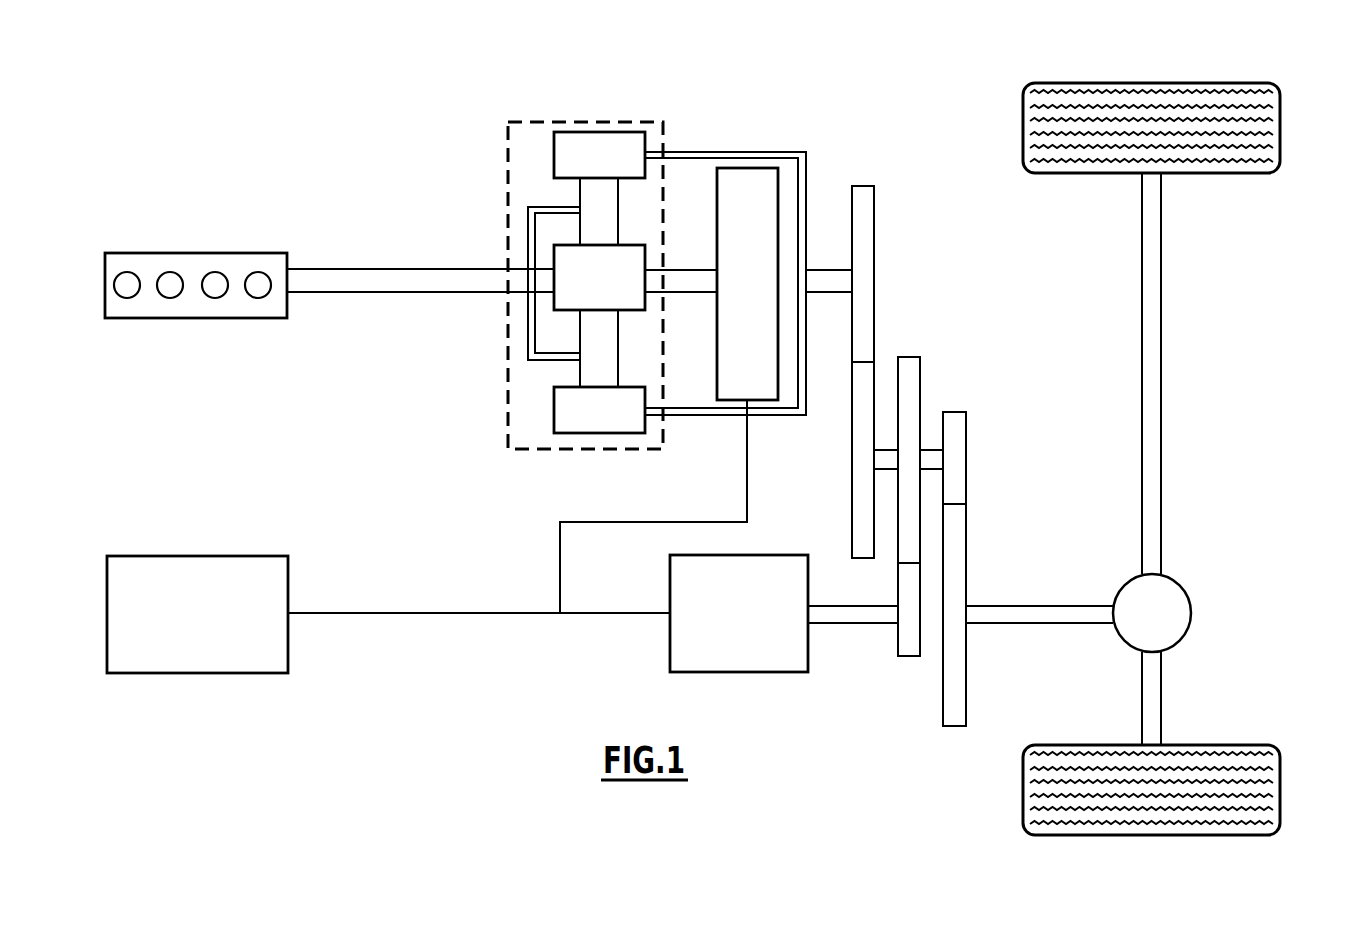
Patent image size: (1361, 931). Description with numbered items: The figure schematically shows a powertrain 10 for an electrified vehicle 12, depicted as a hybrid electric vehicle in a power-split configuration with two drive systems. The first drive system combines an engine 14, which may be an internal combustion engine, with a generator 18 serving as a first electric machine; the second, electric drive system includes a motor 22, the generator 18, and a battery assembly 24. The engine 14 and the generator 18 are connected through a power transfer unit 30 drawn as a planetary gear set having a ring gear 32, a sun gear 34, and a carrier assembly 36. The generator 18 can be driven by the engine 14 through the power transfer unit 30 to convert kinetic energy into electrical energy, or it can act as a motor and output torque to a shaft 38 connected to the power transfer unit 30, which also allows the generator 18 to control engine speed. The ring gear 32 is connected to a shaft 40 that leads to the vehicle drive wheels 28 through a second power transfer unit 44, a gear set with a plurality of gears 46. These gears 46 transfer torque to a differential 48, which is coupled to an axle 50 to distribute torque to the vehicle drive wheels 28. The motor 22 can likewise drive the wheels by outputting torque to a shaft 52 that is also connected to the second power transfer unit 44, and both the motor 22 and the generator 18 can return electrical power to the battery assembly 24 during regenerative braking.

The powertrain 10 is at (352, 157).
The electrified vehicle 12 is at (768, 80).
The engine 14 is at (122, 253).
The generator 18 is at (727, 168).
The motor 22 is at (808, 655).
The battery assembly 24 is at (126, 556).
The vehicle drive wheels 28 is at (1142, 84).
The power transfer unit 30 is at (505, 410).
The ring gear 32 is at (554, 154).
The sun gear 34 is at (552, 253).
The carrier assembly 36 is at (528, 343).
The shaft 38 is at (672, 270).
The shaft 40 is at (838, 248).
The second power transfer unit 44 is at (942, 324).
The gears 46 is at (875, 323).
The differential 48 is at (1183, 636).
The axle 50 is at (1161, 357).
The shaft 52 is at (863, 623).